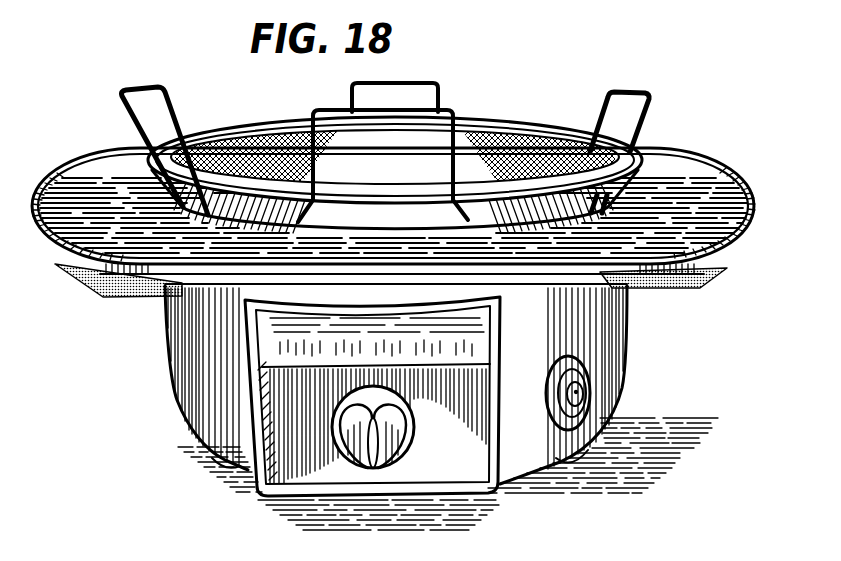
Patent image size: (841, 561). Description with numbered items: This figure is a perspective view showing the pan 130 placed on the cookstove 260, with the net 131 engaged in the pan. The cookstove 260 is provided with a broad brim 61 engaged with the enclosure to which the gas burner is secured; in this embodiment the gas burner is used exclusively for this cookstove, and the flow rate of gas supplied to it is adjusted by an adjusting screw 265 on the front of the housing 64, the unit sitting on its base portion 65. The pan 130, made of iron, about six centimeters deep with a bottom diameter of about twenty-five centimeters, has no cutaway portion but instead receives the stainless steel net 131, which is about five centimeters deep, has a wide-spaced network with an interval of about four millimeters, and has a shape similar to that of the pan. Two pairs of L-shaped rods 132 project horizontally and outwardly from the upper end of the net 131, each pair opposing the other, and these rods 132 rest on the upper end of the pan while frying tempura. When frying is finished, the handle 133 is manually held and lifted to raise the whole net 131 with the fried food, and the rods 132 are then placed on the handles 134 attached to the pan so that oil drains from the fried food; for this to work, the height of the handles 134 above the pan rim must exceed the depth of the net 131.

The broad brim 61 is at (700, 190).
The housing 64 is at (240, 268).
The peripheral rim 65 is at (752, 206).
The pan 130 is at (450, 172).
The net 131 is at (503, 140).
The L-shaped rods 132 is at (297, 218).
The handle 133 is at (395, 112).
The handle 134 is at (143, 88).
The cookstove 260 is at (588, 347).
The adjusting screw 265 is at (373, 445).